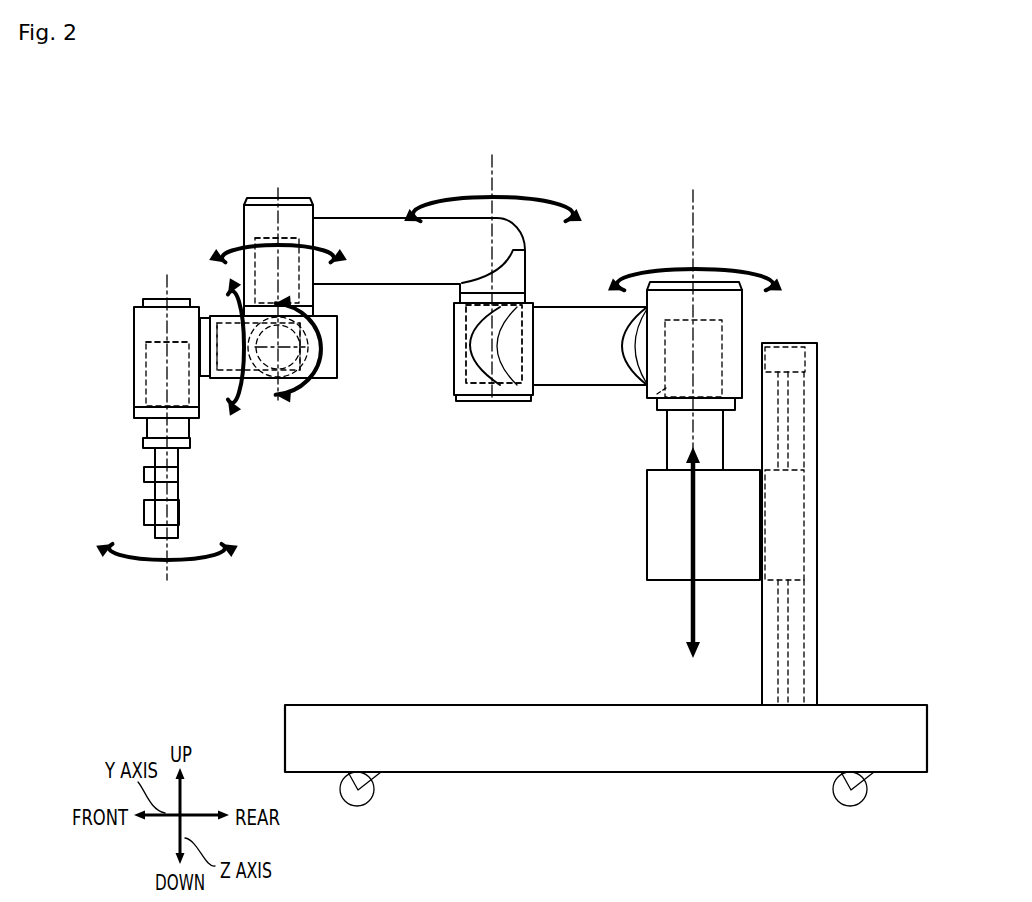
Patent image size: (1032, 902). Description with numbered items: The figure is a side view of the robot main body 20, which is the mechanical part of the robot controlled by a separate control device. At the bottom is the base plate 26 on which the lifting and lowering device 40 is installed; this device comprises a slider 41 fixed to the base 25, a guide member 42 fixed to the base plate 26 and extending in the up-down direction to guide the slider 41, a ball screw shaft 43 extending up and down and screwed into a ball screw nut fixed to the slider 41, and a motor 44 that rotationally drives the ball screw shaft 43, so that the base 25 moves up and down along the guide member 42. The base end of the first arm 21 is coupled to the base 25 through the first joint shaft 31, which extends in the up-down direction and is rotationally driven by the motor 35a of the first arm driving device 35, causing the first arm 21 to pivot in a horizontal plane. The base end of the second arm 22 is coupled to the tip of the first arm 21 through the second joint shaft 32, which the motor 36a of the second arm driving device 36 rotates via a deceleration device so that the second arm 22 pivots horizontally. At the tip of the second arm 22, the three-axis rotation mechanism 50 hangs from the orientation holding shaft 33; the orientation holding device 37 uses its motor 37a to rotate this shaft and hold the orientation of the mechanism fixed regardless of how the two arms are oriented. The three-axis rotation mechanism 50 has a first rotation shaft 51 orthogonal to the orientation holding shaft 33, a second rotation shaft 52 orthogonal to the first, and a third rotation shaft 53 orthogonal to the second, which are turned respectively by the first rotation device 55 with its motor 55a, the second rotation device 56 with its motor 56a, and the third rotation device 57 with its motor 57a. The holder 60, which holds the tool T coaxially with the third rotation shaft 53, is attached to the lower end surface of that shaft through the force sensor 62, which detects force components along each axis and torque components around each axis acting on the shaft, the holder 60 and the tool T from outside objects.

The robot main body 20 is at (800, 145).
The first arm 21 is at (575, 360).
The second arm 22 is at (395, 240).
The base 25 is at (662, 553).
The base plate 26 is at (410, 717).
The first joint shaft 31 is at (722, 290).
The second joint shaft 32 is at (510, 388).
The orientation holding shaft 33 is at (258, 213).
The first arm driving device 35 is at (653, 388).
The motor 35a is at (673, 390).
The second arm driving device 36 is at (460, 380).
The motor 36a is at (480, 372).
The orientation holding device 37 is at (308, 245).
The motor 37a is at (294, 238).
The lifting and lowering device 40 is at (835, 370).
The slider 41 is at (795, 525).
The guide member 42 is at (758, 642).
The ball screw shaft 43 is at (790, 612).
The motor 44 is at (790, 350).
The three-axis rotation mechanism 50 is at (158, 226).
The first rotation shaft 51 is at (325, 316).
The second rotation shaft 52 is at (338, 345).
The third rotation shaft 53 is at (133, 378).
The first rotation device 55 is at (322, 372).
The motor 55a is at (318, 383).
The second rotation device 56 is at (255, 375).
The motor 56a is at (255, 380).
The third rotation device 57 is at (153, 335).
The motor 57a is at (128, 345).
The holder 60 is at (190, 452).
The force sensor 62 is at (143, 432).
The tool T is at (150, 488).